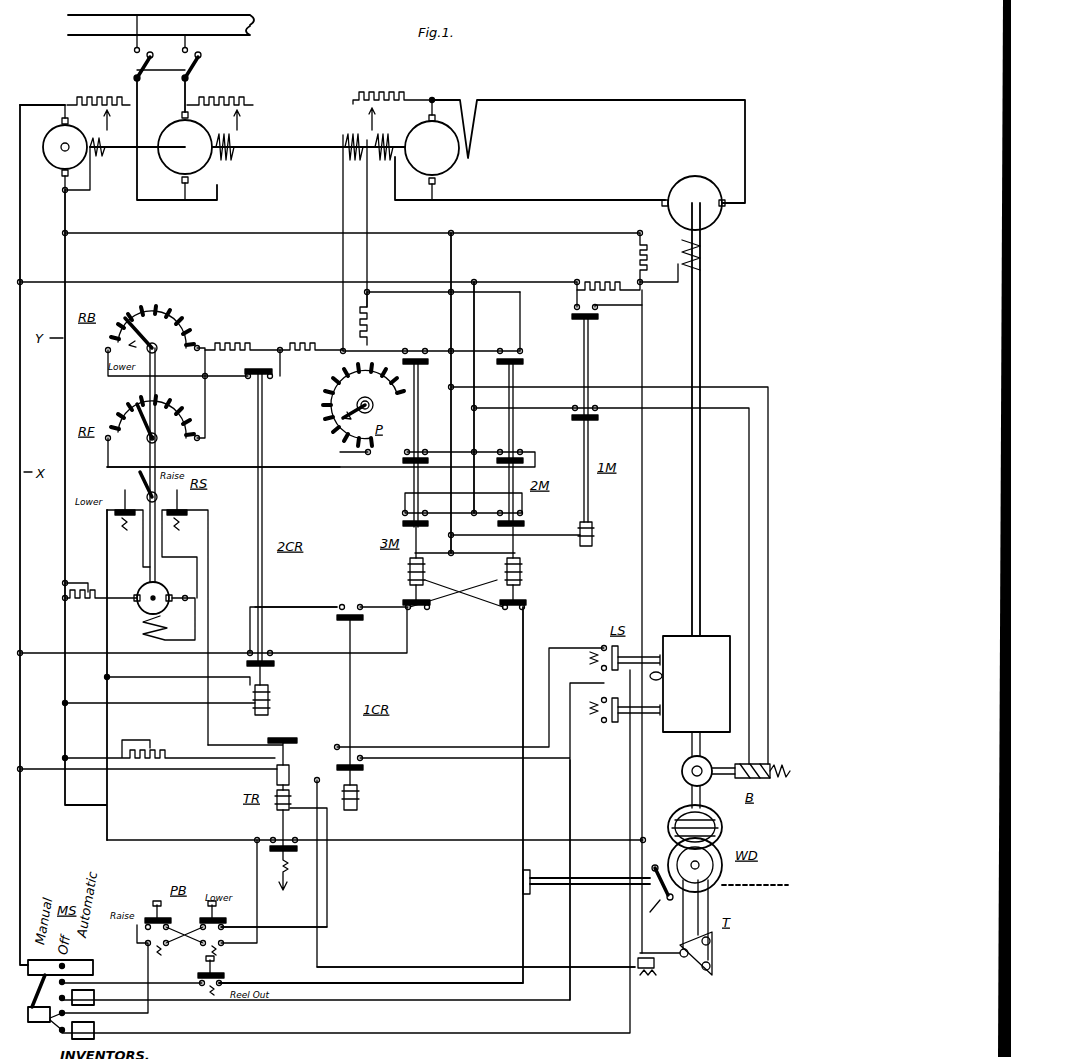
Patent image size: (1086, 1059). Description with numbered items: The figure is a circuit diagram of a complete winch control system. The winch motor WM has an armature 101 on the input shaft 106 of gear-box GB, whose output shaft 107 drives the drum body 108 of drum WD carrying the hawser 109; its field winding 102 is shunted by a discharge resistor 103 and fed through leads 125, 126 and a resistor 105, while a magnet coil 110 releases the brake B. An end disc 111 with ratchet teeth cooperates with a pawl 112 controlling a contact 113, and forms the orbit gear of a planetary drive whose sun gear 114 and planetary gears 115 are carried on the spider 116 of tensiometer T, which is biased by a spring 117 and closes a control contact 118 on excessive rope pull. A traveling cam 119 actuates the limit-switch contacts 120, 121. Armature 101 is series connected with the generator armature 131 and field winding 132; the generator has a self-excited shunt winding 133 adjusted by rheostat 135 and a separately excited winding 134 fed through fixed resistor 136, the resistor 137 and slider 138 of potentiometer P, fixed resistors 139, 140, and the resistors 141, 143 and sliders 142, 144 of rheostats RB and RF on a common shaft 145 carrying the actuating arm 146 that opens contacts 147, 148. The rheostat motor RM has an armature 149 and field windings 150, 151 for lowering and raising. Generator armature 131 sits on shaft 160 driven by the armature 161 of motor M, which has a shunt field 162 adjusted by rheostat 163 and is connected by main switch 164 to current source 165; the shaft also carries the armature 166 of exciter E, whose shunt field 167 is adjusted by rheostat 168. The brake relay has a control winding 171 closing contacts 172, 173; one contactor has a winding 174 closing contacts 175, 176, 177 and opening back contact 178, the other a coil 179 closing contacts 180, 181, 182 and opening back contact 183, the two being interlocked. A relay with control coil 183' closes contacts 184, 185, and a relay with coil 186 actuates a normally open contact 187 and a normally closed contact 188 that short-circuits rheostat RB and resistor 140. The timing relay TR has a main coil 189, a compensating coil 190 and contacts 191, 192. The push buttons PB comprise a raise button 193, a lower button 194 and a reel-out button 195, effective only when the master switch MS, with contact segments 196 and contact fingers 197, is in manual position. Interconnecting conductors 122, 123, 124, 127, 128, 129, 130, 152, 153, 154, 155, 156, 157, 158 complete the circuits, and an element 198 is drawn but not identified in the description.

The armature 101 is at (715, 212).
The separately excited field winding 102 is at (714, 259).
The discharge resistor 103 is at (635, 262).
The resistor 105 is at (574, 278).
The input shaft 106 is at (701, 519).
The output shaft 107 is at (690, 748).
The drum body 108 is at (722, 818).
The hawser 109 is at (765, 890).
The magnet coil 110 is at (732, 776).
The end disc 111 is at (723, 881).
The pawl 112 is at (645, 899).
The contact 113 is at (538, 874).
The sun gear 114 is at (657, 910).
The planetary gears 115 is at (677, 868).
The spider 116 is at (714, 956).
The spring 117 is at (681, 973).
The control contact 118 is at (651, 979).
The cam 119 is at (662, 675).
The contact 120 is at (598, 643).
The contact 121 is at (612, 718).
The conductor 122 is at (522, 938).
The conductor 123 is at (522, 703).
The conductor 124 is at (451, 301).
The lead 125 is at (266, 235).
The lead 126 is at (264, 282).
The conductor 127 is at (483, 446).
The conductor 128 is at (327, 876).
The conductor 129 is at (520, 320).
The conductor 130 is at (321, 474).
The armature 131 is at (462, 170).
The generator field winding 132 is at (478, 143).
The self-excited shunt winding 133 is at (395, 182).
The separately excited shunt winding 134 is at (345, 160).
The rheostat 135 is at (382, 94).
The fixed resistor 136 is at (368, 322).
The resistor 137 is at (330, 441).
The slider 138 is at (362, 400).
The fixed resistor 139 is at (310, 346).
The fixed resistor 140 is at (253, 346).
The resistor 141 is at (168, 313).
The slider 142 is at (151, 330).
The resistor 143 is at (180, 406).
The slider 144 is at (138, 440).
The common shaft 145 is at (170, 450).
The actuating arm 146 is at (140, 480).
The contact 147 is at (118, 501).
The contact 148 is at (191, 498).
The armature 149 is at (142, 583).
The field winding 150 is at (155, 579).
The field winding 151 is at (152, 642).
The conductor 152 is at (227, 842).
The conductor 153 is at (406, 968).
The conductor 154 is at (644, 820).
The conductor 155 is at (630, 826).
The conductor 156 is at (443, 741).
The conductor 157 is at (571, 815).
The conductor 158 is at (314, 608).
The shaft 160 is at (303, 144).
The armature 161 is at (172, 133).
The shunt field 162 is at (240, 138).
The rheostat 163 is at (236, 98).
The main switch 164 is at (201, 61).
The current source 165 is at (258, 31).
The armature 166 is at (53, 168).
The self-excited shunt field 167 is at (100, 150).
The rheostat 168 is at (112, 97).
The control winding 171 is at (590, 528).
The relay contact 172 is at (593, 418).
The relay contact 173 is at (588, 320).
The winding 174 is at (521, 567).
The contact 175 is at (523, 525).
The contact 176 is at (515, 455).
The contact 177 is at (524, 364).
The back contact 178 is at (528, 601).
The control coil 179 is at (424, 562).
The contact 180 is at (403, 522).
The contact 181 is at (418, 448).
The contact 182 is at (412, 367).
The back contact 183 is at (453, 609).
The control coil 183' is at (371, 790).
The contact 184 is at (365, 770).
The contact 185 is at (352, 618).
The coil 186 is at (274, 692).
The normally open contact 187 is at (274, 660).
The normally closed contact 188 is at (265, 378).
The main control coil 189 is at (286, 796).
The compensating coil 190 is at (290, 771).
The contact 191 is at (290, 749).
The contact 192 is at (284, 842).
The raise button 193 is at (163, 903).
The lower button 194 is at (218, 914).
The reel-out push button 195 is at (225, 978).
The contact segments 196 is at (96, 963).
The contact fingers 197 is at (48, 1032).
The resistor 198 is at (162, 748).